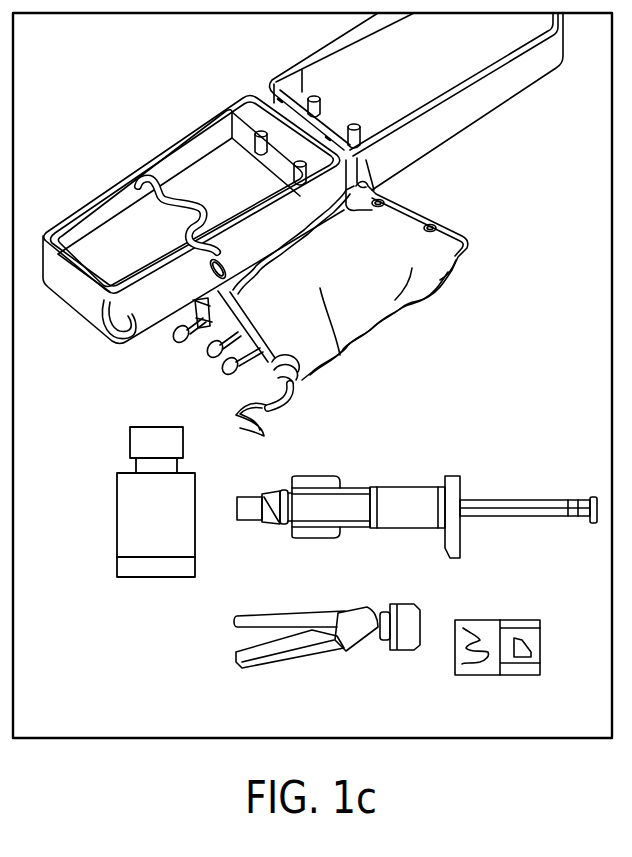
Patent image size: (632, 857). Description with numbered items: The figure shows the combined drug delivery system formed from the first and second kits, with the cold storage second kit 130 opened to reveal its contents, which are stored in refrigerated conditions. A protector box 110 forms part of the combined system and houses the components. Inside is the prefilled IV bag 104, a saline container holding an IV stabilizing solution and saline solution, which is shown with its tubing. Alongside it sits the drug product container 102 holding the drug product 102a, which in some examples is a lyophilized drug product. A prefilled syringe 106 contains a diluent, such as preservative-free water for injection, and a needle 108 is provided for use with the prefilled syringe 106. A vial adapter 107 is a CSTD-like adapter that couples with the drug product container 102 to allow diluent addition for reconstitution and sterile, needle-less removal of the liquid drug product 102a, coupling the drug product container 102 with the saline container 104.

The second container or kit 130 is at (100, 335).
The protector box 110 is at (443, 143).
The saline container or IV bag 104 is at (455, 263).
The drug product container 102 is at (108, 502).
The drug product 102a is at (108, 558).
The pre-filled syringe 106 is at (462, 480).
The needle 108 is at (360, 656).
The vial adapter 107 is at (488, 656).